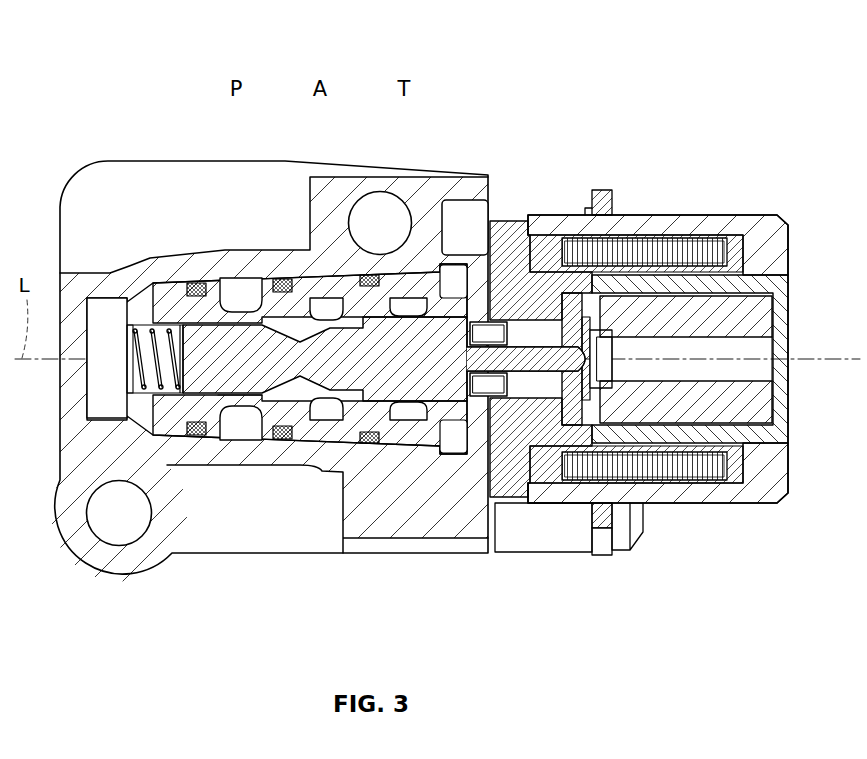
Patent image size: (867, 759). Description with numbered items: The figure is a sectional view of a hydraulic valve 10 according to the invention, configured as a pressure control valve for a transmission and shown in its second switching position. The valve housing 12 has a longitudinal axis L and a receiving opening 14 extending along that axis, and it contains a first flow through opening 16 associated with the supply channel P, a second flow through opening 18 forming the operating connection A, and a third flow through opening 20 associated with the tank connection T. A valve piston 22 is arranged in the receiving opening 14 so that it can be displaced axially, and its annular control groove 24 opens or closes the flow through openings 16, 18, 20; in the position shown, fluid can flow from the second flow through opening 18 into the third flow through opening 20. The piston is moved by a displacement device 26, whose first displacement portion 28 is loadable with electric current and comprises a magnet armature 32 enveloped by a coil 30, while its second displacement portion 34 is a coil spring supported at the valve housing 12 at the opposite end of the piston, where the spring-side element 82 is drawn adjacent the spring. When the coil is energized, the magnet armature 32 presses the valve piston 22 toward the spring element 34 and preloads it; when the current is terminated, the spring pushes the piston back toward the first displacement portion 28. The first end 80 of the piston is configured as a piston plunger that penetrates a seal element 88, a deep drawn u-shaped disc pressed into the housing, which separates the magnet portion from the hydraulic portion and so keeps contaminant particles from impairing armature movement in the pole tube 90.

The hydraulic valve 10 is at (118, 137).
The valve housing 12 is at (437, 418).
The receiving opening 14 is at (303, 402).
The first flow through opening 16 is at (238, 314).
The second flow through opening 18 is at (328, 312).
The third flow through opening 20 is at (408, 307).
The valve piston 22 is at (240, 394).
The control groove 24 is at (357, 388).
The displacement device 26 is at (685, 178).
The first displacement portion 28 is at (725, 215).
The coil 30 is at (643, 252).
The magnet armature 32 is at (745, 317).
The spring element 34 is at (173, 333).
The first end 80 is at (557, 372).
The end plug 82 is at (193, 383).
The seal element 88 is at (504, 182).
The pole tube 90 is at (690, 434).